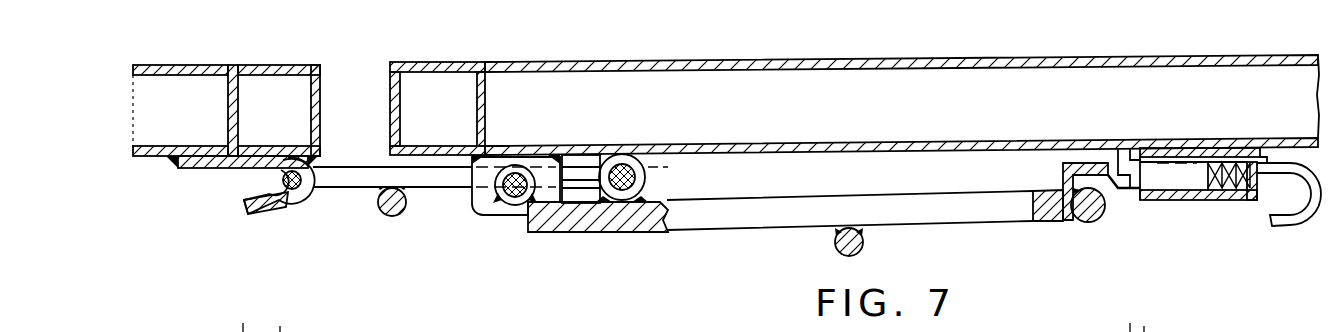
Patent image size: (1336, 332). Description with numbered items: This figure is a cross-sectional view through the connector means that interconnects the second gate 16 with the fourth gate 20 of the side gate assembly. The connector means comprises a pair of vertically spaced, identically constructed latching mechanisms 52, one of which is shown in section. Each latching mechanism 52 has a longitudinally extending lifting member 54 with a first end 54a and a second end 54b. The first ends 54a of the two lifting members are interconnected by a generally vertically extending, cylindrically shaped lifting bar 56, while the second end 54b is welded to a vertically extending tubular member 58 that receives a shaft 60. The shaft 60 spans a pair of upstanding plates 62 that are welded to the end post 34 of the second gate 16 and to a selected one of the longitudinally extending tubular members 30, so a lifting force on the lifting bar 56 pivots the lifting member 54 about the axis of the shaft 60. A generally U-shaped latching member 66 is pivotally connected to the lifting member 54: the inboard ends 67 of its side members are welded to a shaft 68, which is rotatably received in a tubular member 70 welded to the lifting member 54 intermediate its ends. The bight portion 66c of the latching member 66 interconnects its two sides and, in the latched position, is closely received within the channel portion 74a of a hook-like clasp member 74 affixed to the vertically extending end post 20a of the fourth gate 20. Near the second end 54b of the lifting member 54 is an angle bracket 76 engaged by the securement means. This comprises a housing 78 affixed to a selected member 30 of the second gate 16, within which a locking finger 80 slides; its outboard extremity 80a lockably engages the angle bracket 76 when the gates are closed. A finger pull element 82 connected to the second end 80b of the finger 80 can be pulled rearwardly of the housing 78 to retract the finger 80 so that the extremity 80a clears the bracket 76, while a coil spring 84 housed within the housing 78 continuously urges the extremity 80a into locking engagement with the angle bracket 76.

The second side gate 16 is at (897, 54).
The fourth gate 20 is at (196, 60).
The end post 20a is at (258, 64).
The tubular member 30 is at (733, 69).
The end post 34 is at (433, 62).
The latching mechanism 52 is at (646, 248).
The lifting member 54 is at (802, 226).
The first end 54a is at (1040, 187).
The second end 54b is at (547, 219).
The lifting bar 56 is at (1090, 223).
The tubular member 58 is at (515, 173).
The shaft 60 is at (535, 179).
The upstanding plate 62 is at (486, 216).
The latching member 66 is at (348, 160).
The bight portion 66c is at (268, 166).
The inboard end 67 is at (585, 180).
The shaft 68 is at (630, 158).
The tubular member 70 is at (644, 186).
The hook-like clasp member 74 is at (212, 170).
The channel portion 74a is at (285, 205).
The angle bracket 76 is at (1068, 162).
The housing 78 is at (1223, 208).
The locking finger 80 is at (1160, 165).
The outboard extremity 80a is at (1120, 175).
The second end 80b is at (1200, 182).
The finger pull element 82 is at (1279, 228).
The coil spring 84 is at (1240, 170).